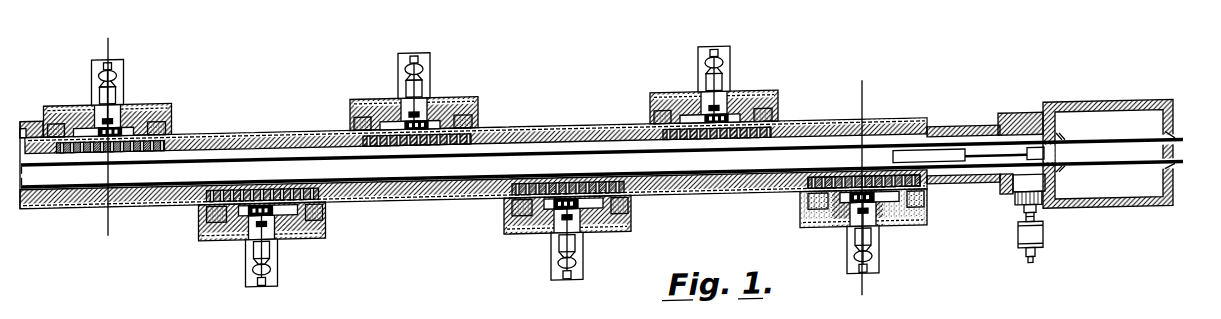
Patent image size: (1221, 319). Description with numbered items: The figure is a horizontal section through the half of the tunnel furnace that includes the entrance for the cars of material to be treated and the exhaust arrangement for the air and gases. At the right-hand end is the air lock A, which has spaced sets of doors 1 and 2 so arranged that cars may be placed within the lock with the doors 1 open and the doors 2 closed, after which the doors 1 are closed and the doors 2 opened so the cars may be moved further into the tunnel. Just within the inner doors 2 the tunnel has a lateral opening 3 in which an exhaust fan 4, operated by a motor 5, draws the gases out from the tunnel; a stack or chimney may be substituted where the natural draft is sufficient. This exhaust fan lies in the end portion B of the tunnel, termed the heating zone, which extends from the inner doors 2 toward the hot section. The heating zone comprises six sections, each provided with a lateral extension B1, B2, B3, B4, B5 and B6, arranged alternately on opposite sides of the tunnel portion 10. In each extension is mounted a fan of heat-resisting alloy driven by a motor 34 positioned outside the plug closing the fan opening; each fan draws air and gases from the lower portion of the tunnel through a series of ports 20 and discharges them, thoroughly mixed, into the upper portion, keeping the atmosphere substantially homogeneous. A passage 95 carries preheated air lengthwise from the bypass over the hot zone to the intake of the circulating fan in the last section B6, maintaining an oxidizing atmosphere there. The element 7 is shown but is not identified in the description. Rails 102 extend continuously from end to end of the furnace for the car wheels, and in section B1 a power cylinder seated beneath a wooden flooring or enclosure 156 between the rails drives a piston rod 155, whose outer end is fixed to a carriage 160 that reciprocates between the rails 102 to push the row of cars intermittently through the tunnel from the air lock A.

The outer doors 1 is at (1180, 175).
The inner doors 2 is at (966, 187).
The lateral opening 3 is at (1070, 195).
The exhaust fan 4 is at (1065, 237).
The motor 5 is at (1025, 246).
The thin tube section 7 is at (969, 150).
The tunnel portion 10 is at (195, 125).
The ports 20 is at (852, 187).
The motor 34 is at (116, 78).
The passage 95 is at (34, 110).
The rails 102 is at (385, 171).
The piston rod 155 is at (985, 162).
The wooden flooring or enclosure 156 is at (925, 158).
The carriage 160 is at (1030, 157).
The air lock A is at (1113, 112).
The heating zone B is at (903, 120).
The lateral extension B1 is at (897, 235).
The lateral extension B2 is at (749, 98).
The lateral extension B3 is at (602, 236).
The lateral extension B4 is at (451, 95).
The lateral extension B5 is at (305, 236).
The lateral extension B6 is at (136, 94).